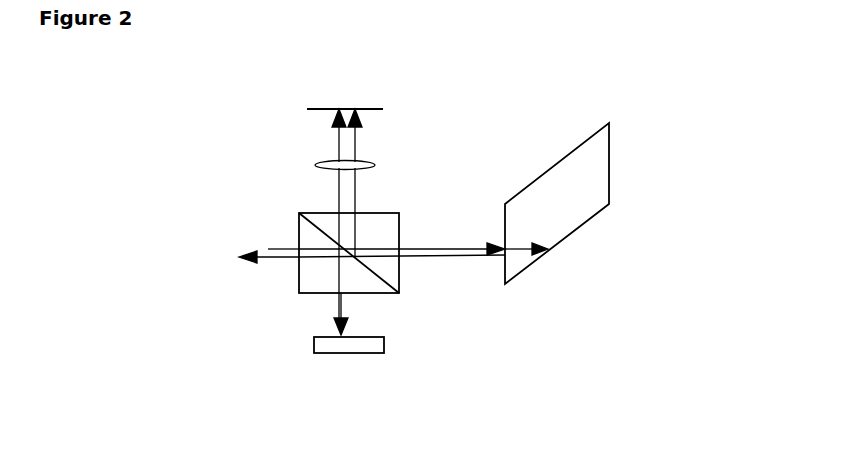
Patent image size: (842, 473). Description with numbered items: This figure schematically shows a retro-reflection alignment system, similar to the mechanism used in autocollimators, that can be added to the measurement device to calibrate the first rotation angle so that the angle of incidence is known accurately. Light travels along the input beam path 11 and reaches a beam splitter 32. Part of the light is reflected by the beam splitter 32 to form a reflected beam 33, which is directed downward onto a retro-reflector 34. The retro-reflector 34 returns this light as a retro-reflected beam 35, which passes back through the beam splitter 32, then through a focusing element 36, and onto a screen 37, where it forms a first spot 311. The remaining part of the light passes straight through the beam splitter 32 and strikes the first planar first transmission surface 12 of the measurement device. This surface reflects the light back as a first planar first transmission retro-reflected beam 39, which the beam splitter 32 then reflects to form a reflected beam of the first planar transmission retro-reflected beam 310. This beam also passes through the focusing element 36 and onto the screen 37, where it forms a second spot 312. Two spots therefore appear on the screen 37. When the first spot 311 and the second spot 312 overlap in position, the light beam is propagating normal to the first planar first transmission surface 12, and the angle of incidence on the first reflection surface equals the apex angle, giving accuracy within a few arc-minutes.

The input beam path 11 is at (287, 243).
The first planar first transmission surface 12 is at (498, 235).
The beam splitter 32 is at (293, 283).
The reflected beam 33 is at (353, 307).
The retro-reflector 34 is at (390, 359).
The retro-reflected beam 35 is at (330, 198).
The focusing element 36 is at (310, 160).
The screen 37 is at (360, 110).
The first planar first transmission retro-reflected beam 39 is at (450, 263).
The reflected beam of the first planar transmission retro-reflected beam 310 is at (360, 197).
The first spot 311 is at (337, 103).
The second spot 312 is at (363, 103).